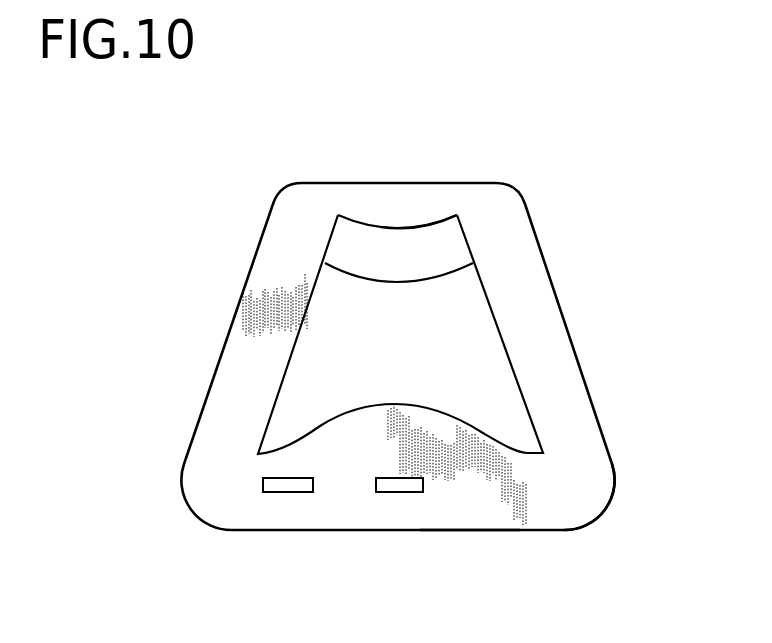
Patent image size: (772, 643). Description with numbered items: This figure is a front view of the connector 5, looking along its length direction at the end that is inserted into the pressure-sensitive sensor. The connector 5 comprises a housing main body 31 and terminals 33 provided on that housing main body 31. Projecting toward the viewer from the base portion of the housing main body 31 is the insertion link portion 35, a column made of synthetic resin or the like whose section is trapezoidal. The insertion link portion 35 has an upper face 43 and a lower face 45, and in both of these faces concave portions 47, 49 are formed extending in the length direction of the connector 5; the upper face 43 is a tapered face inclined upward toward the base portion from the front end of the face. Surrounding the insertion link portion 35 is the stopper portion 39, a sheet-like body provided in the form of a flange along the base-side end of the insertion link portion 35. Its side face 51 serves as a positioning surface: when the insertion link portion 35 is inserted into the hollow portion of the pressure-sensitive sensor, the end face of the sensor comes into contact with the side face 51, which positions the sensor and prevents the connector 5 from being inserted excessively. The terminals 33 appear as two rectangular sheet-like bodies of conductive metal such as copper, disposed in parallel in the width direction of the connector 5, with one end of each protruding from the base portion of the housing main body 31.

The connector 5 is at (198, 191).
The housing main body 31 is at (348, 178).
The terminal 33 is at (383, 492).
The insertion link portion 35 is at (313, 342).
The stopper portion 39 is at (607, 513).
The upper face 43 is at (457, 253).
The lower face 45 is at (512, 458).
The concave portion 47 is at (400, 255).
The concave portion 49 is at (423, 408).
The side face 51 is at (463, 503).